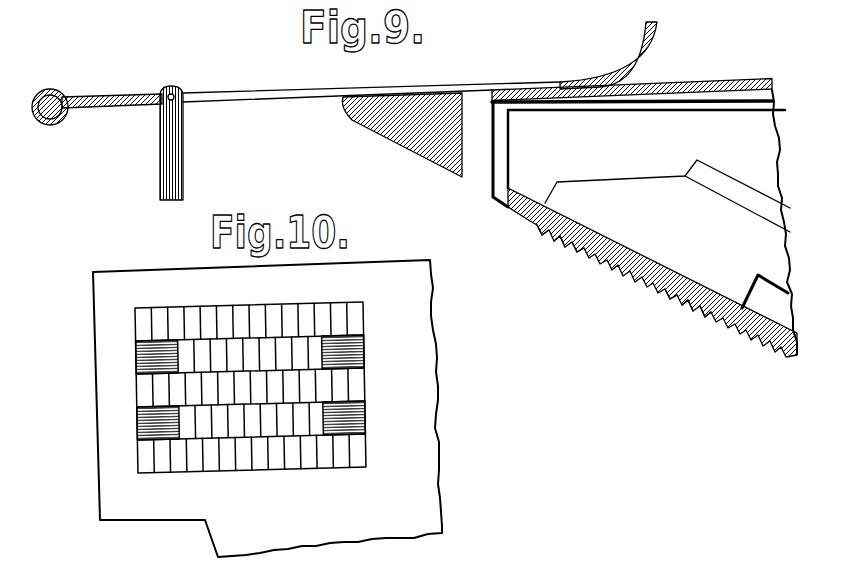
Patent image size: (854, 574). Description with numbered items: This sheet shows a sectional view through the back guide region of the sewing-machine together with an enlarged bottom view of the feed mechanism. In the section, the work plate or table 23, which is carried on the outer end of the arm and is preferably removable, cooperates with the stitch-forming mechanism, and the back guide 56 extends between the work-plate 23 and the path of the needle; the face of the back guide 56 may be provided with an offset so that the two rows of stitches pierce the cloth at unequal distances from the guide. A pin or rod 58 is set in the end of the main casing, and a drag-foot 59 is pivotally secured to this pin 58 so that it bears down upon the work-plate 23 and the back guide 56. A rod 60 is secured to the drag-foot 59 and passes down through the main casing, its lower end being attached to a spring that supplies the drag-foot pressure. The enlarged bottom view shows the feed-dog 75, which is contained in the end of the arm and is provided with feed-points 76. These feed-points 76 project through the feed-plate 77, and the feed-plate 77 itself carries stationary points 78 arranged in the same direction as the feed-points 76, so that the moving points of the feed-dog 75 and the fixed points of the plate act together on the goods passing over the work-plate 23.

In FIG. 9, the work-plate 23 is at (700, 78).
In FIG. 9, the back guide 56 is at (380, 128).
In FIG. 9, the pin or rod 58 is at (50, 117).
In FIG. 9, the drag-foot 59 is at (477, 84).
In FIG. 9, the rod 60 is at (173, 162).
In FIG. 9, the feed-dog 75 is at (667, 199).
In FIG. 9, the feed-points 76 is at (596, 261).
In FIG. 10, the feed-points 76 is at (291, 320).
In FIG. 9, the feed-plate 77 is at (688, 297).
In FIG. 10, the feed-plate 77 is at (275, 387).
In FIG. 9, the stationary points 78 is at (713, 313).
In FIG. 10, the stationary points 78 is at (210, 318).